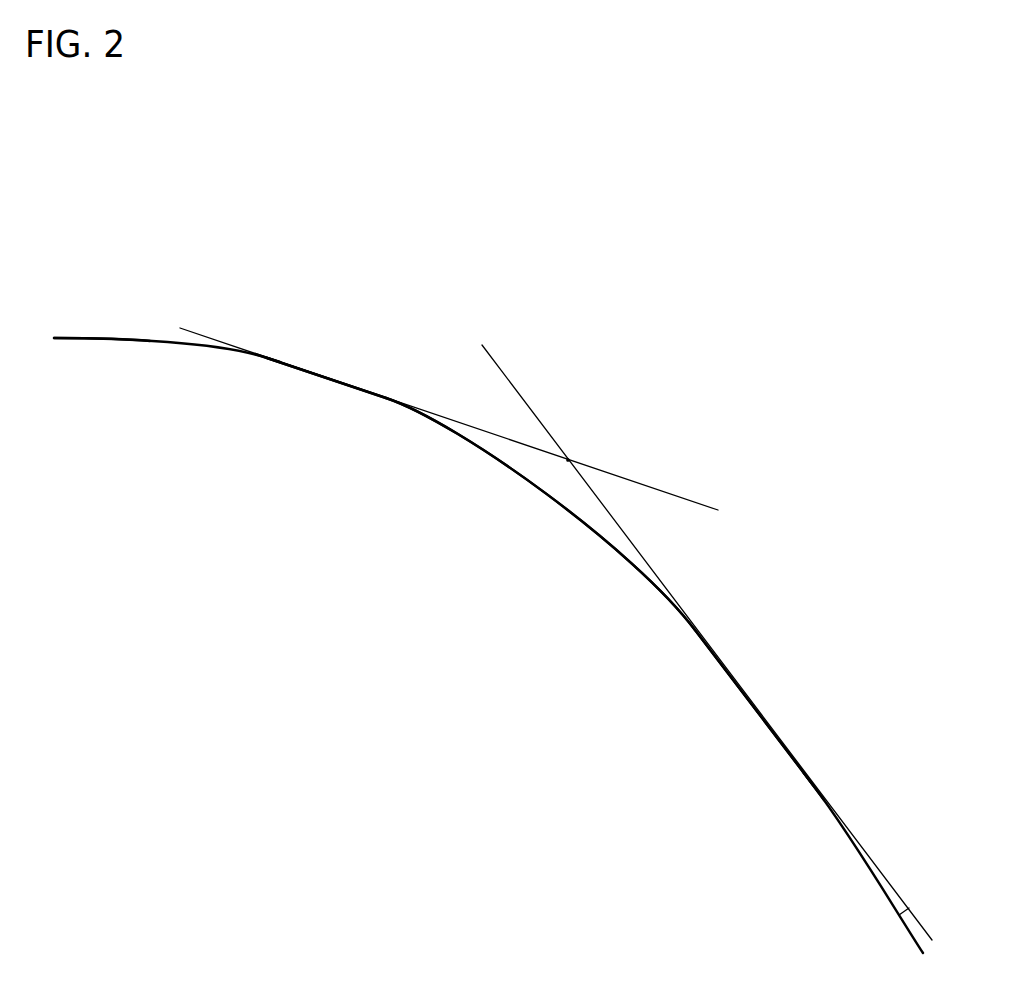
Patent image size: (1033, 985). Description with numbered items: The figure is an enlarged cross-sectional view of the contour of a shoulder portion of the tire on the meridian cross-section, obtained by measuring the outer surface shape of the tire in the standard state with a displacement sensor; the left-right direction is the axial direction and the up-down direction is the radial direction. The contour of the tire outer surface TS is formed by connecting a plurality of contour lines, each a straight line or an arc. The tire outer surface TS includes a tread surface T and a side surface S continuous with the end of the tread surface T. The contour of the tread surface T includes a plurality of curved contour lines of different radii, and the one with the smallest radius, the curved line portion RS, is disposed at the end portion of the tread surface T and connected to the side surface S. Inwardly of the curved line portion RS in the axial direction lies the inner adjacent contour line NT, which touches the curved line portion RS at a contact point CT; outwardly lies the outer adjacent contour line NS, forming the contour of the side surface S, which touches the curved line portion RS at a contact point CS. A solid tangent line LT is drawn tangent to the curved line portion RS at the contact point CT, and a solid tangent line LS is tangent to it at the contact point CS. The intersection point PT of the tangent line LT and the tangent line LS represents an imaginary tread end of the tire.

The tread surface T is at (145, 338).
The tire outer surface TS is at (79, 336).
The tangent line LT is at (693, 500).
The tangent line LS is at (500, 368).
The inner adjacent contour line NT is at (267, 360).
The contact point CT is at (330, 377).
The intersection point PT is at (568, 460).
The curved line portion RS is at (527, 478).
The contact point CS is at (768, 722).
The outer adjacent contour line NS is at (813, 785).
The side surface S is at (905, 911).